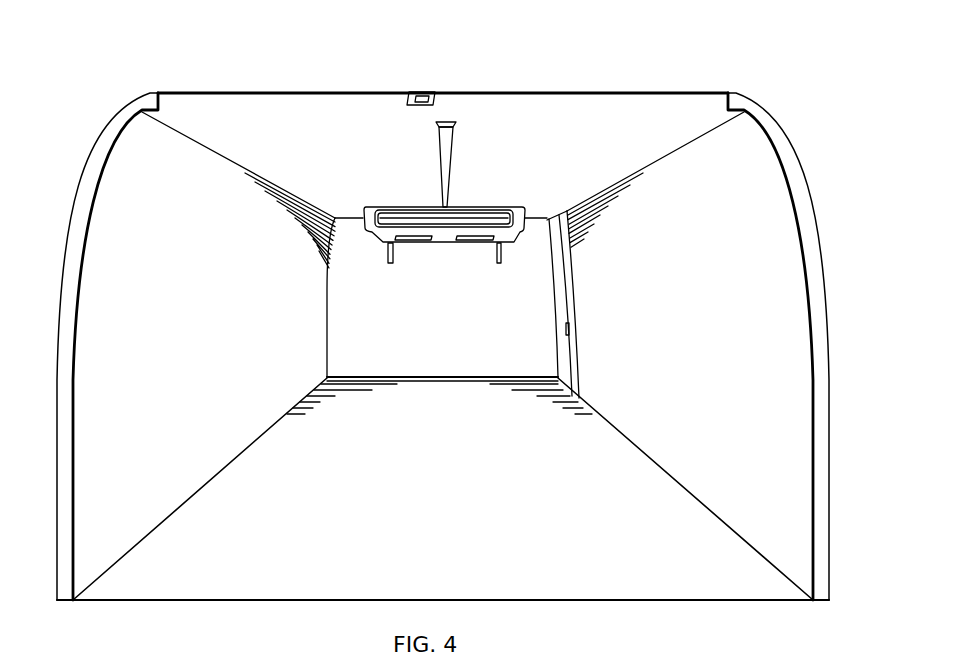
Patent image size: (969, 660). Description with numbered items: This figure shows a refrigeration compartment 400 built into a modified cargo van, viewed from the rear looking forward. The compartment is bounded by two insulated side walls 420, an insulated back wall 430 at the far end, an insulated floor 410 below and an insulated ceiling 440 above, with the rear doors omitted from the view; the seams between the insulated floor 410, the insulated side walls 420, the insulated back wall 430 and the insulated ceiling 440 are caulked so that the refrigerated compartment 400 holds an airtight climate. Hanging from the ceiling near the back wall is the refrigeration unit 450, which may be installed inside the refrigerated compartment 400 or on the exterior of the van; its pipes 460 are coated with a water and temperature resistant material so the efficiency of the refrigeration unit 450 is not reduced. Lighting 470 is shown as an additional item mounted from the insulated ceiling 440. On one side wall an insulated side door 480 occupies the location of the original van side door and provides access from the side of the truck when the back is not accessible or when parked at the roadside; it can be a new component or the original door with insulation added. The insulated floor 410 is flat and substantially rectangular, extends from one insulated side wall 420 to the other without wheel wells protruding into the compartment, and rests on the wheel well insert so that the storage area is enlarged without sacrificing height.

The refrigeration compartment 400 is at (645, 75).
The insulated floor 410 is at (463, 509).
The insulated side walls 420 is at (116, 176).
The insulated back wall 430 is at (463, 345).
The insulated ceiling 440 is at (281, 103).
The refrigeration unit 450 is at (480, 205).
The pipes 460 is at (391, 246).
The lighting 470 is at (440, 163).
The insulated side door 480 is at (575, 310).